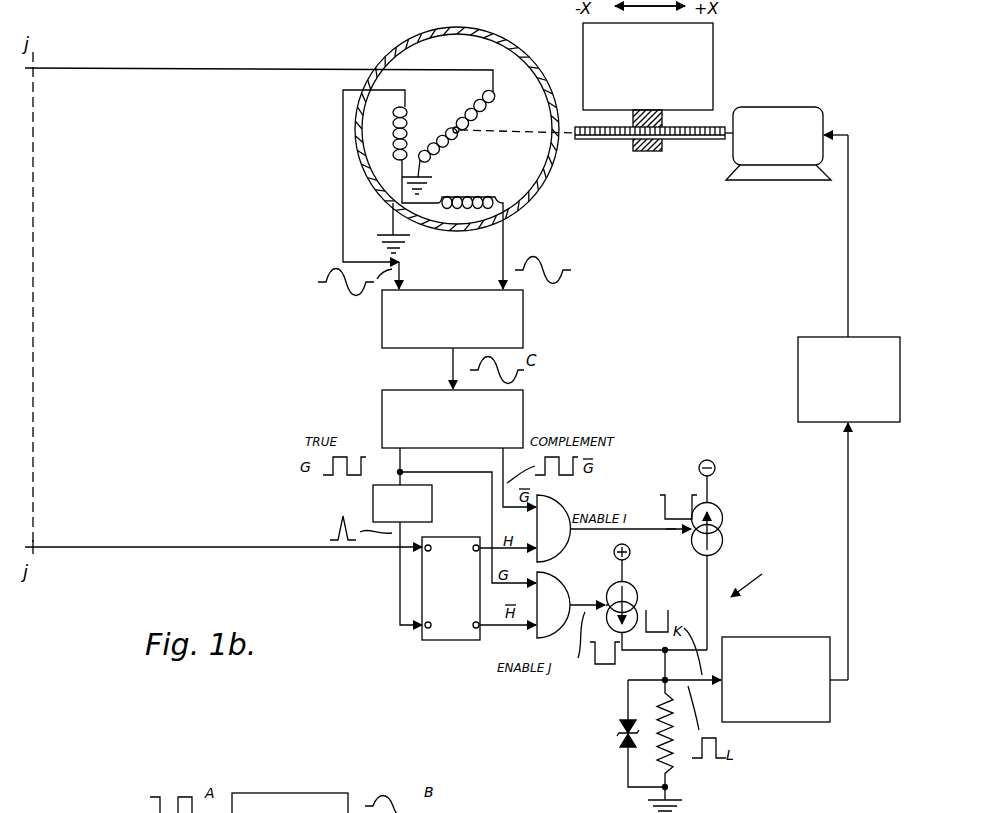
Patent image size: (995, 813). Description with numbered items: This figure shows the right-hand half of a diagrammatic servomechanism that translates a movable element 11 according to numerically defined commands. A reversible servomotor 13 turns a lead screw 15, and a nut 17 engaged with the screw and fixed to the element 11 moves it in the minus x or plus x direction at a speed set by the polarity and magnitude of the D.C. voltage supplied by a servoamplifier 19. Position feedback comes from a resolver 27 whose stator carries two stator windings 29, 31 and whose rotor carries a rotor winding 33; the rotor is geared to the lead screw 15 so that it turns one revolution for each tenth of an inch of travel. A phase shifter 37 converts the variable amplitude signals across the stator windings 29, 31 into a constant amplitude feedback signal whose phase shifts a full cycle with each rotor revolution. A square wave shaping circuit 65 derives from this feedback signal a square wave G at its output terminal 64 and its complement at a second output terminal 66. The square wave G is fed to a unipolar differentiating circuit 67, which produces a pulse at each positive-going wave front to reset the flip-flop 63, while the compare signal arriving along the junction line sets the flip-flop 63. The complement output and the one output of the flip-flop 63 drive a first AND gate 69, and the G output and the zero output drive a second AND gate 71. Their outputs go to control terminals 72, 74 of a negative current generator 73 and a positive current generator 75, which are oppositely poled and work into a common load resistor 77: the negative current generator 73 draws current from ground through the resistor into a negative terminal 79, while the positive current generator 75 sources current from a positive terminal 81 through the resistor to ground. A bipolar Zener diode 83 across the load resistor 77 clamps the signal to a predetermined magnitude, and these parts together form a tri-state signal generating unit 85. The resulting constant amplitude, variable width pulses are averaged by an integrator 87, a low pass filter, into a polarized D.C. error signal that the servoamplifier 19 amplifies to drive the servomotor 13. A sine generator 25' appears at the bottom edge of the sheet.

The movable element 11 is at (713, 52).
The servomotor 13 is at (802, 108).
The lead screw 15 is at (617, 141).
The nut 17 is at (652, 152).
The servoamplifier 19 is at (814, 340).
The sine generator 25' is at (290, 784).
The resolver 27 is at (402, 42).
The stator winding 29 is at (405, 130).
The stator winding 31 is at (466, 196).
The rotor winding 33 is at (492, 106).
The phase shifter 37 is at (523, 334).
The flip-flop 63 is at (422, 595).
The output terminal 64 is at (368, 473).
The square wave shaping circuit 65 is at (523, 418).
The second output terminal 66 is at (505, 460).
The unipolar differentiating circuit 67 is at (432, 501).
The first AND gate 69 is at (570, 508).
The second AND gate 71 is at (580, 570).
The control terminal 72 is at (668, 531).
The negative current generator 73 is at (723, 520).
The control terminal 74 is at (580, 606).
The positive current generator 75 is at (637, 593).
The load resistor 77 is at (670, 760).
The negative terminal 79 is at (715, 469).
The positive terminal 81 is at (629, 557).
The bipolar Zener diode 83 is at (617, 736).
The tri-state signal generating unit 85 is at (757, 584).
The integrator 87 is at (806, 722).